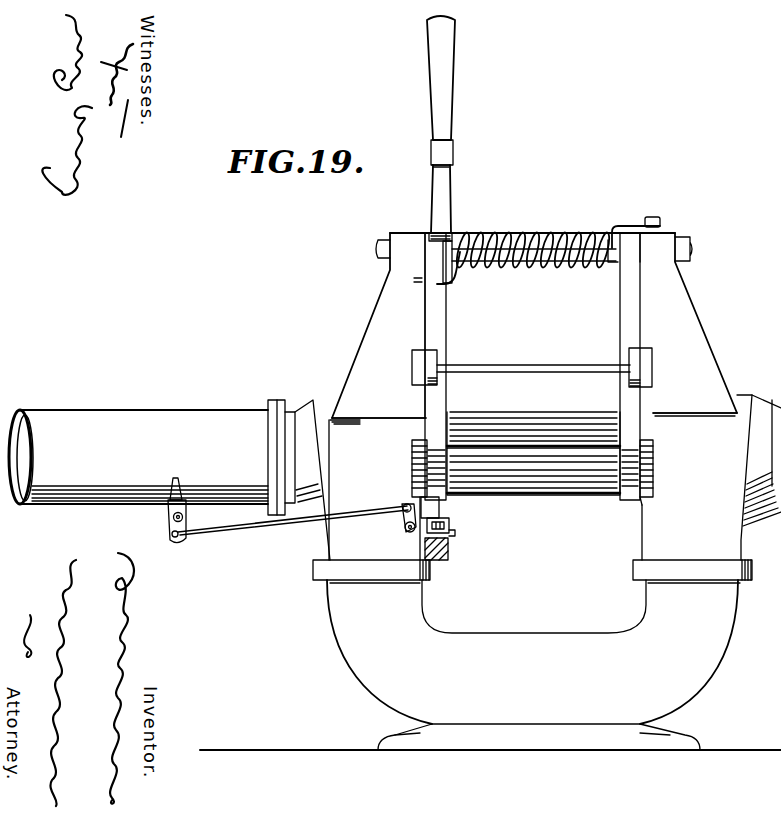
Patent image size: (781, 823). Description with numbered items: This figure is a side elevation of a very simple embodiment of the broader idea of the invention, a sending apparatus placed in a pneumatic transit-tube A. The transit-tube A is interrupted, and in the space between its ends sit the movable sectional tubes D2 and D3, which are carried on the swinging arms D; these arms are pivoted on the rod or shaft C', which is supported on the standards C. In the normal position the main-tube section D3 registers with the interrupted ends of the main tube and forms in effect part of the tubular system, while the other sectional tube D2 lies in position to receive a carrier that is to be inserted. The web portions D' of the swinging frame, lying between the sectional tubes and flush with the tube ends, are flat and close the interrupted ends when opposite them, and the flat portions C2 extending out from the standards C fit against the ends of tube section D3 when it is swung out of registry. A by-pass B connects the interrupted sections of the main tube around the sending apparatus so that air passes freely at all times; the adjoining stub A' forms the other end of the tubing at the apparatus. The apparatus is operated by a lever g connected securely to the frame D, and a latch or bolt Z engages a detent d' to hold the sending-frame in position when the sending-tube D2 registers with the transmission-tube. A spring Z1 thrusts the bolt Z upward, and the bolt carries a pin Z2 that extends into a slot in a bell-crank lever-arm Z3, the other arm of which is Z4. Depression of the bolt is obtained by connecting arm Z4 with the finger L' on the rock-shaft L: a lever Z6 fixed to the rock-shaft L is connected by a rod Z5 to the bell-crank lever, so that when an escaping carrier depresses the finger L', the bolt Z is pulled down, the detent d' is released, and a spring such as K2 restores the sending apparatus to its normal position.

The lever g is at (443, 108).
The spring K2 is at (520, 232).
The rod or shaft C' is at (605, 227).
The standards C is at (534, 325).
The swinging arms D is at (532, 366).
The sectional tube D2 is at (533, 418).
The main-tube section D3 is at (533, 471).
The web portions of the swinging frame D' is at (535, 447).
The flat portions extending from the standards C2 is at (665, 440).
The detent d' is at (513, 468).
The transit-tube A is at (169, 480).
The discharge stub A' is at (762, 475).
The rock-shaft L is at (156, 521).
The finger L' is at (191, 479).
The lever Z6 is at (274, 526).
The rod Z5 is at (412, 532).
The bell-crank lever arm Z4 is at (402, 520).
The latch or bolt Z is at (441, 510).
The bell-crank lever-arm Z3 is at (449, 526).
The pin Z2 is at (455, 533).
The spring Z1 is at (449, 548).
The by-pass B is at (532, 665).